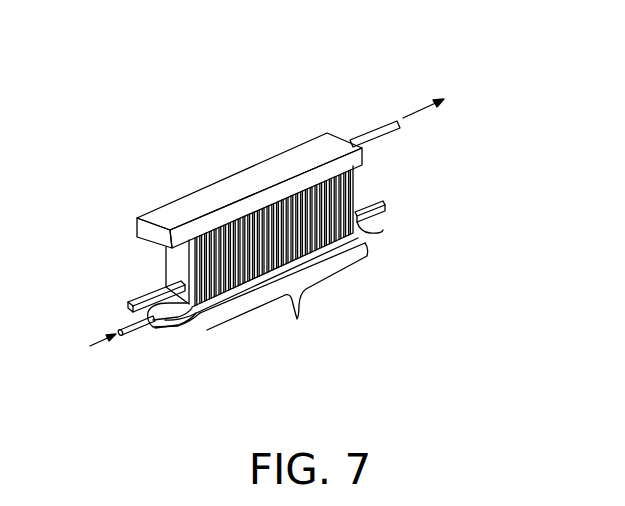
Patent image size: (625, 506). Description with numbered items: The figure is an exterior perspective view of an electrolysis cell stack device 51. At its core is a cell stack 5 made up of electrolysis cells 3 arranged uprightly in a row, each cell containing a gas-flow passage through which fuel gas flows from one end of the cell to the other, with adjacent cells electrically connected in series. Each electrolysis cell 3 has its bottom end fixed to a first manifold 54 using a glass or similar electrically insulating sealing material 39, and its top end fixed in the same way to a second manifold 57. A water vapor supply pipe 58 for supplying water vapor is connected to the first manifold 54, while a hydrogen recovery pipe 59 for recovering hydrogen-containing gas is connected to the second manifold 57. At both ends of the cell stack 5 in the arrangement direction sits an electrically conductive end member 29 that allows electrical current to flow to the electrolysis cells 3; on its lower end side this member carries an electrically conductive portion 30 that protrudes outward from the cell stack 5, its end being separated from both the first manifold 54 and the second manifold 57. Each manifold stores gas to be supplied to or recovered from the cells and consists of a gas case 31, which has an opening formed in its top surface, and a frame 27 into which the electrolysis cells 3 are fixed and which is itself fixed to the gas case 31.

The electrolysis cell stack device 51 is at (205, 113).
The second manifold 57 is at (163, 215).
The hydrogen recovery pipe 59 is at (380, 123).
The electrolysis cell 3 is at (340, 200).
The electrically conductive end member 29 is at (170, 262).
The electrically conductive portion 30 is at (122, 303).
The sealing material 39 is at (383, 231).
The cell stack 5 is at (266, 294).
The frame 27 is at (185, 318).
The gas case 31 is at (158, 328).
The first manifold 54 is at (185, 330).
The water vapor supply pipe 58 is at (132, 335).